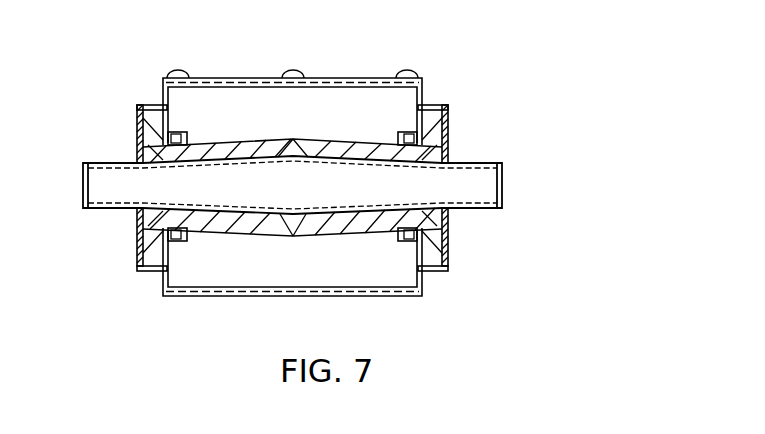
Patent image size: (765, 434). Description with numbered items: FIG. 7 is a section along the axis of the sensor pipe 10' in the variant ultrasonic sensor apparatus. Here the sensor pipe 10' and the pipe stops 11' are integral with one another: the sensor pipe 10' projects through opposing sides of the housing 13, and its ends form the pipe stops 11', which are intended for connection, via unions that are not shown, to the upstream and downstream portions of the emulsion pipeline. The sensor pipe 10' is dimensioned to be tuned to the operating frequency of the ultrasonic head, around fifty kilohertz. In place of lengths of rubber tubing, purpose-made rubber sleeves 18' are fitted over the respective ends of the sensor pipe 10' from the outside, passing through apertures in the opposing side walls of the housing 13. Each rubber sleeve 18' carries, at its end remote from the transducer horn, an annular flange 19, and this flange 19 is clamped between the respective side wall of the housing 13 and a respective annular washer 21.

The sensor pipe 10' is at (292, 240).
The pipe stops 11' is at (286, 208).
The housing 13 is at (205, 296).
The rubber sleeves 18' is at (292, 97).
The annular flange 19 is at (137, 123).
The annular washer 21 is at (137, 130).